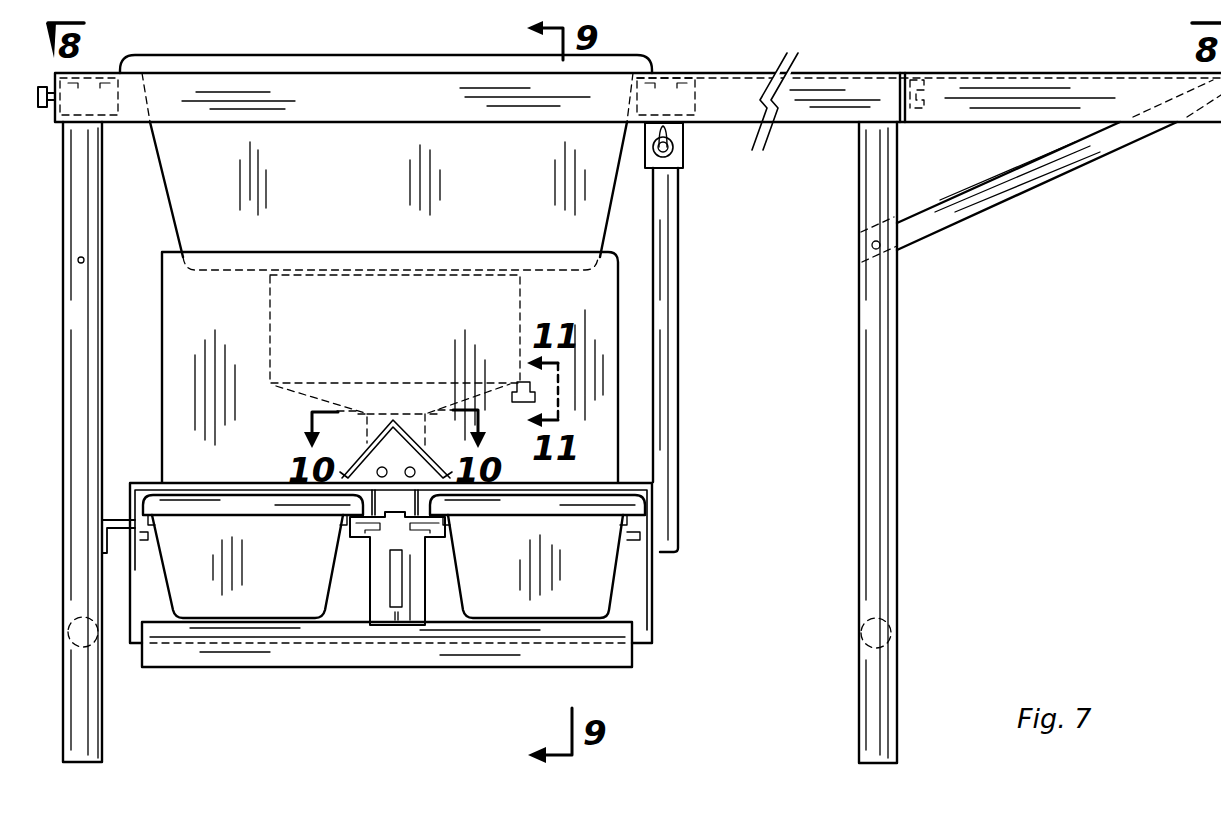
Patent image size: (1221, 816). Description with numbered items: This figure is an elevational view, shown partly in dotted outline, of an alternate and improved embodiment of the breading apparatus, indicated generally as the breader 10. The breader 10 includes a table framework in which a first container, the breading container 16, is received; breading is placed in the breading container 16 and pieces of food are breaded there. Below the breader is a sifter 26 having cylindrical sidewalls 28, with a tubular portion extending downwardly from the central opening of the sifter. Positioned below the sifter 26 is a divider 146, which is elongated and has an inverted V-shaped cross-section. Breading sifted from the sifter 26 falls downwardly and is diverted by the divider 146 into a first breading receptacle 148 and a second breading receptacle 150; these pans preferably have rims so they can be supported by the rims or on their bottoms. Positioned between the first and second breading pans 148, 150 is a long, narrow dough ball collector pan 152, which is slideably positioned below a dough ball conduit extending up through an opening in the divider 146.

The breader 10 is at (668, 60).
The breading container 16 is at (387, 57).
The sifter 26 is at (268, 290).
The cylindrical sidewalls 28 is at (320, 318).
The divider 146 is at (352, 428).
The first breading receptacle 148 is at (253, 607).
The second breading receptacle 150 is at (513, 603).
The dough ball collector pan 152 is at (403, 627).